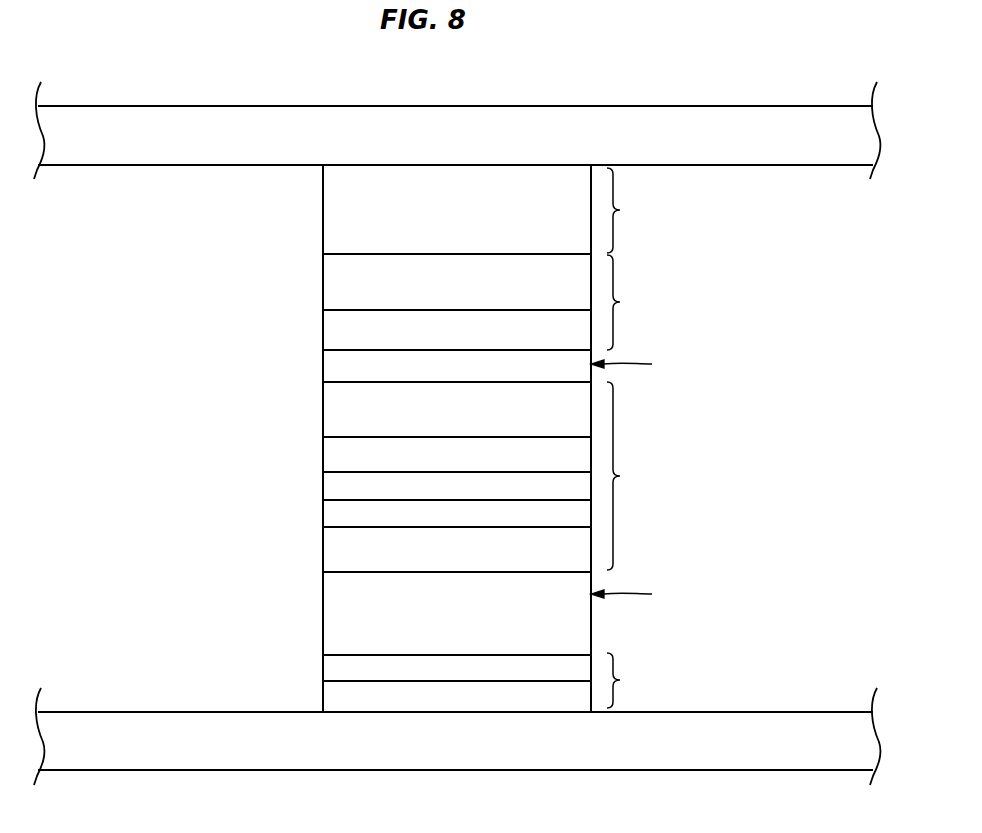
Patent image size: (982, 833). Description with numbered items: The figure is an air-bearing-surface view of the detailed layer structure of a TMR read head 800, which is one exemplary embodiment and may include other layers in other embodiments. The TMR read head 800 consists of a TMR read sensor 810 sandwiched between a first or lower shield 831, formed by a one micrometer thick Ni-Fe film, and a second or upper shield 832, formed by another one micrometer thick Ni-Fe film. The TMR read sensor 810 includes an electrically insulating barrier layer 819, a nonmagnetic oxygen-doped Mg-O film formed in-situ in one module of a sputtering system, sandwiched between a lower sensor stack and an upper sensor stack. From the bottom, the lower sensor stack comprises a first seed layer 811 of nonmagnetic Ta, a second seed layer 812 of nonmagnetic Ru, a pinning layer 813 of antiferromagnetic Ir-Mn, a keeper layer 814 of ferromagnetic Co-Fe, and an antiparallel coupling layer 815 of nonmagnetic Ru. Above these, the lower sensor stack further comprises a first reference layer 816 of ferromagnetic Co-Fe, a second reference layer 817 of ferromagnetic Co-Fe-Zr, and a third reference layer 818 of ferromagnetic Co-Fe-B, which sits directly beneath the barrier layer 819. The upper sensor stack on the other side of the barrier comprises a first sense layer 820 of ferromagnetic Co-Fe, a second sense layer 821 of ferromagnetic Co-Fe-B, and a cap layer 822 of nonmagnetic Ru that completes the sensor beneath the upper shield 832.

The TMR read head 800 is at (203, 66).
The TMR read sensor 810 is at (145, 173).
The first seed layer 811 is at (323, 699).
The second seed layer 812 is at (323, 669).
The pinning layer 813 is at (323, 621).
The keeper layer 814 is at (323, 551).
The antiparallel coupling layer 815 is at (323, 514).
The first reference layer 816 is at (323, 487).
The second reference layer 817 is at (323, 459).
The third reference layer 818 is at (323, 412).
The barrier layer 819 is at (323, 368).
The first sense layer 820 is at (323, 330).
The second sense layer 821 is at (323, 283).
The cap layer 822 is at (323, 211).
The lower shield 831 is at (240, 747).
The upper shield 832 is at (233, 147).